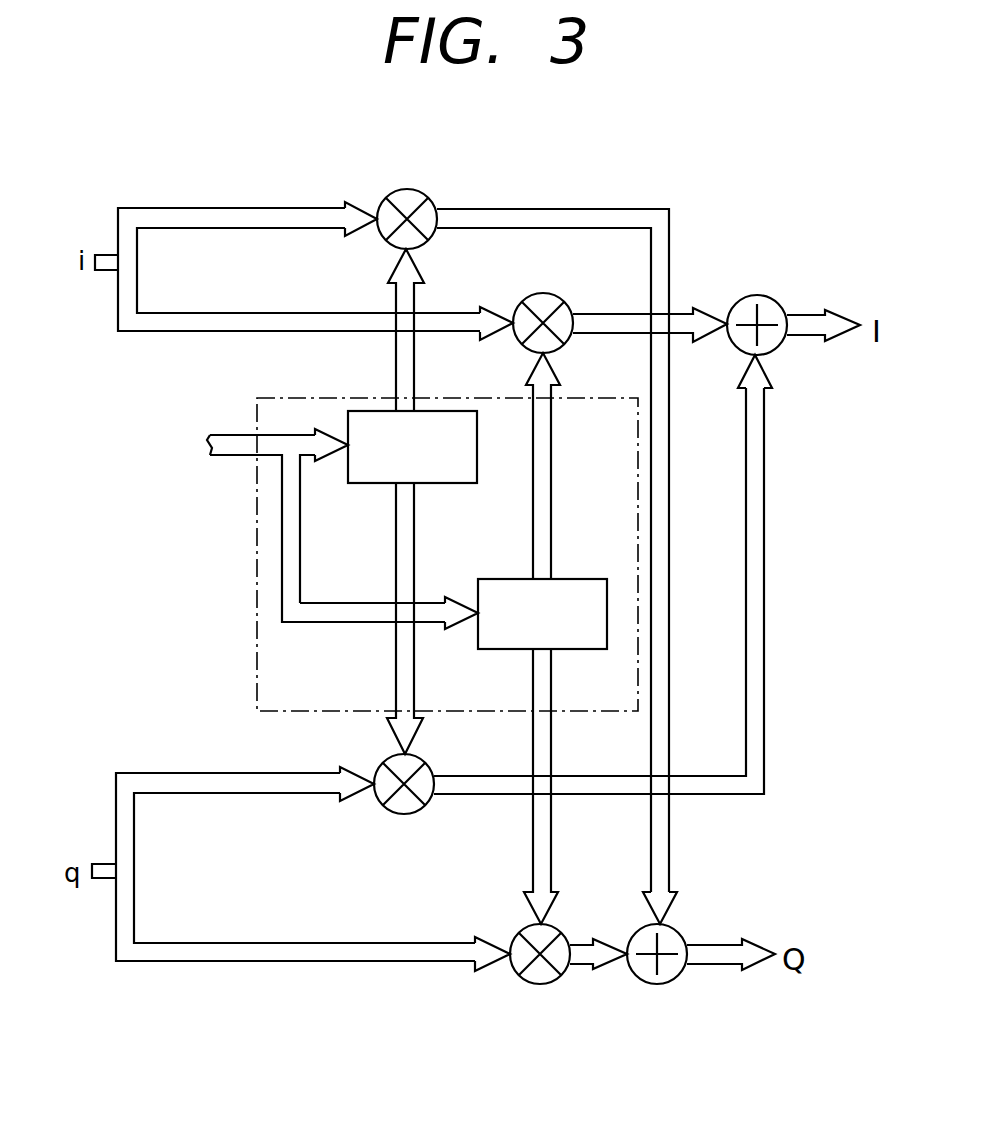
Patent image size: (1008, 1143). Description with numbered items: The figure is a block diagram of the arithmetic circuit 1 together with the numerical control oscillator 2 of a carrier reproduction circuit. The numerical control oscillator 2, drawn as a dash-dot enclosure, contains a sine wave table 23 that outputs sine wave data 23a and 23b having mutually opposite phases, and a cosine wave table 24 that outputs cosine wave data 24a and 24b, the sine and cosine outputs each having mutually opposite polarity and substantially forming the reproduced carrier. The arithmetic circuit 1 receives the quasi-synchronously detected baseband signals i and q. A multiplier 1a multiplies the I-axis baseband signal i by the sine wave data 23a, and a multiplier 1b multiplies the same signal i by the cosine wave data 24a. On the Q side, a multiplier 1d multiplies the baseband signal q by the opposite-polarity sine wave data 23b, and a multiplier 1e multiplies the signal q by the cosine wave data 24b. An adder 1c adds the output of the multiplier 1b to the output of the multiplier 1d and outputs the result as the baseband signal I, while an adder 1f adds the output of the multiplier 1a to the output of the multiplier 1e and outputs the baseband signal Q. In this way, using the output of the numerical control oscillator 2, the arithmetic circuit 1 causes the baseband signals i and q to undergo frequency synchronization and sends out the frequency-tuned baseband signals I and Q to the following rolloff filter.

The arithmetic circuit 1 is at (703, 285).
The multiplier 1a is at (407, 189).
The multiplier 1b is at (528, 297).
The adder 1c is at (756, 294).
The multiplier 1d is at (404, 814).
The multiplier 1e is at (522, 931).
The adder 1f is at (640, 930).
The numerical control oscillator 2 is at (350, 556).
The sine wave table 23 is at (372, 410).
The sine wave data 23a is at (416, 370).
The sine wave data 23b is at (395, 678).
The cosine wave table 24 is at (502, 578).
The cosine wave data 24a is at (552, 527).
The cosine wave data 24b is at (532, 697).